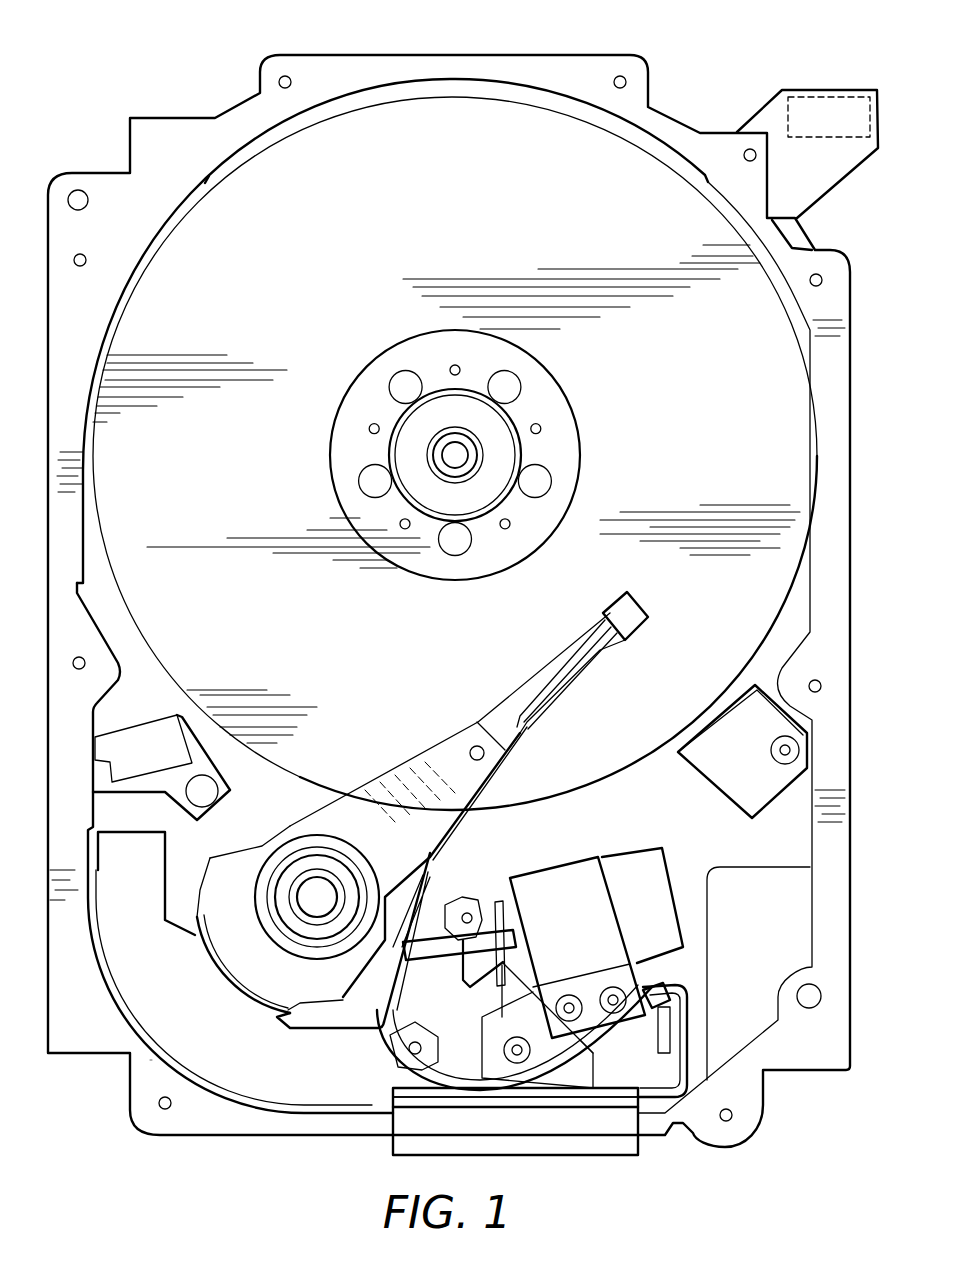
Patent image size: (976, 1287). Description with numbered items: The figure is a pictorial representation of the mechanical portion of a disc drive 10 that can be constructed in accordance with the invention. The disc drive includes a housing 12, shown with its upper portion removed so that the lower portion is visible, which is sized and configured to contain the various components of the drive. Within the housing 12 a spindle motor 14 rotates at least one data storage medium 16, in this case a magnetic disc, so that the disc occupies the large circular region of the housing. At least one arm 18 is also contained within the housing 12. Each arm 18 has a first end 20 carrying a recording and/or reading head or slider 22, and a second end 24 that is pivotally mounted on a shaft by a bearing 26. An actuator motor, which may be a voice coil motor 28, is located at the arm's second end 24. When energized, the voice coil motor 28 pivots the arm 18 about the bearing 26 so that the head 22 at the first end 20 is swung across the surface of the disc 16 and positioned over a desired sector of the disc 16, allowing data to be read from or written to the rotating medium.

The disc drive 10 is at (110, 109).
The housing 12 is at (598, 68).
The spindle motor 14 is at (448, 460).
The data storage medium 16 is at (335, 241).
The arm 18 is at (438, 768).
The first end 20 is at (568, 650).
The head 22 is at (637, 603).
The second end 24 is at (343, 830).
The bearing 26 is at (287, 857).
The voice coil motor 28 is at (172, 1022).